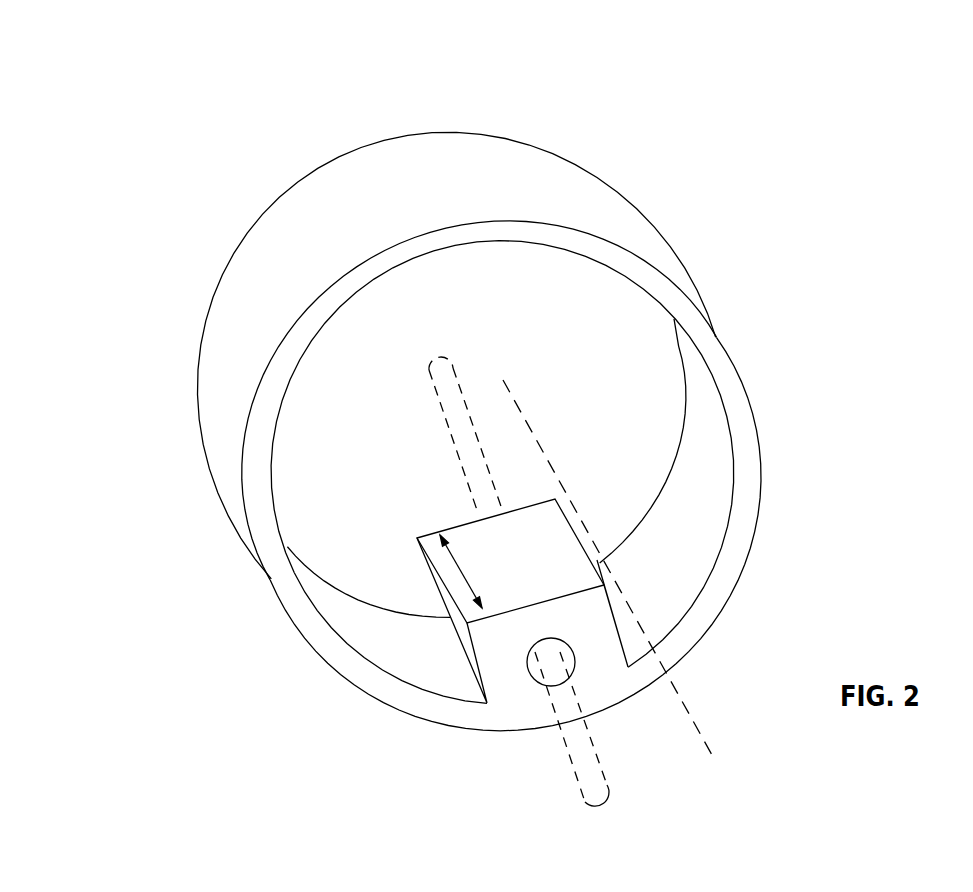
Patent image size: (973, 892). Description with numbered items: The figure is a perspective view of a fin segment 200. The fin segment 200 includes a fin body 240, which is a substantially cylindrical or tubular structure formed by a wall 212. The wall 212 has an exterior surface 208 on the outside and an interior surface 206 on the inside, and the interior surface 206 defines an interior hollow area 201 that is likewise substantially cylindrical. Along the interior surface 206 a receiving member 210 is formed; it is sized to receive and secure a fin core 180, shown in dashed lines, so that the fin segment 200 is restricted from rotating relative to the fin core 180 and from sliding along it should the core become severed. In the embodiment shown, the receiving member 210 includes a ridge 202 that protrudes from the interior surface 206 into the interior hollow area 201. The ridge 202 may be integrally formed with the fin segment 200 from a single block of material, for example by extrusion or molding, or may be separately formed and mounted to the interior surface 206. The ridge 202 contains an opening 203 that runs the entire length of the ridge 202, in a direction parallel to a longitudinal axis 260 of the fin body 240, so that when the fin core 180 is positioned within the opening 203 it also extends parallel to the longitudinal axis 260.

The fin segment 200 is at (778, 74).
The fin body 240 is at (656, 217).
The exterior surface 208 is at (211, 420).
The wall 212 is at (292, 334).
The interior hollow area 201 is at (638, 353).
The receiving member 210 is at (642, 481).
The interior surface 206 is at (379, 649).
The ridge 202 is at (601, 664).
The longitudinal axis 260 is at (532, 401).
The opening 203 is at (535, 689).
The fin core 180 is at (561, 775).